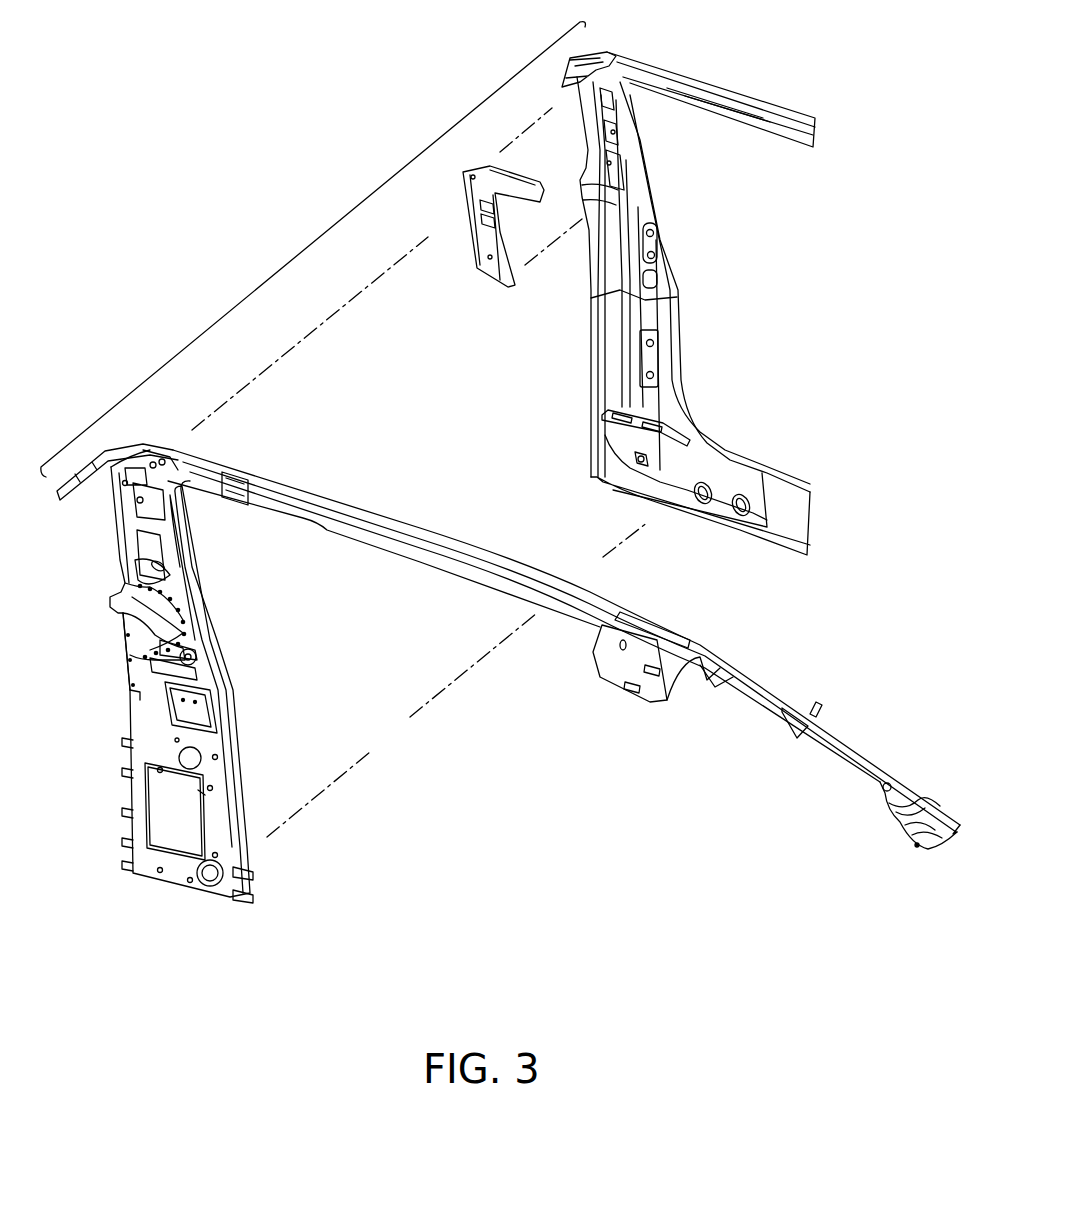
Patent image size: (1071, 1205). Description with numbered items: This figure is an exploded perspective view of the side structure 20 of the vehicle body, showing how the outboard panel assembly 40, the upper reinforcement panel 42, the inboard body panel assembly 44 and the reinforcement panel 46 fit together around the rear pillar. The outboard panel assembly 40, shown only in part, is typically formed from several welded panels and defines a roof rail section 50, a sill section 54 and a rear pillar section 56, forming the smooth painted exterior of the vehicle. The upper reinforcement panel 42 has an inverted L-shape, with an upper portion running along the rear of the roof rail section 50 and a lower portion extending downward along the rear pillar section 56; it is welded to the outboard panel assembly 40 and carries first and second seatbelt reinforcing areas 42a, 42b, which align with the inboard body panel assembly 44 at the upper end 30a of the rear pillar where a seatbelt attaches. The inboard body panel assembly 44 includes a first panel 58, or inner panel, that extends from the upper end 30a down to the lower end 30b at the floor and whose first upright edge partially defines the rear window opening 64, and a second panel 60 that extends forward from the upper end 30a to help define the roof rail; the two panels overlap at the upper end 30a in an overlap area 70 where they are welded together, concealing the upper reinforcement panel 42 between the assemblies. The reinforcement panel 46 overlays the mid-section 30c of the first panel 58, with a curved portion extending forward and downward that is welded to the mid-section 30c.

The side structure 20 is at (297, 257).
The upper end 30a is at (178, 453).
The lower end 30b is at (220, 898).
The mid-section 30c is at (193, 628).
The outboard panel assembly 40 is at (696, 303).
The upper reinforcement panel 42 is at (472, 238).
The first seatbelt reinforcing area 42a is at (487, 199).
The second seatbelt reinforcing area 42b is at (490, 222).
The inboard body panel assembly 44 is at (169, 685).
The reinforcement panel 46 is at (120, 620).
The roof rail section 50 is at (763, 108).
The sill section 54 is at (793, 487).
The rear pillar section 56 is at (667, 300).
The first panel 58 is at (168, 572).
The second panel 60 is at (163, 463).
The rear window opening 64 is at (125, 570).
The overlap area 70 is at (67, 490).